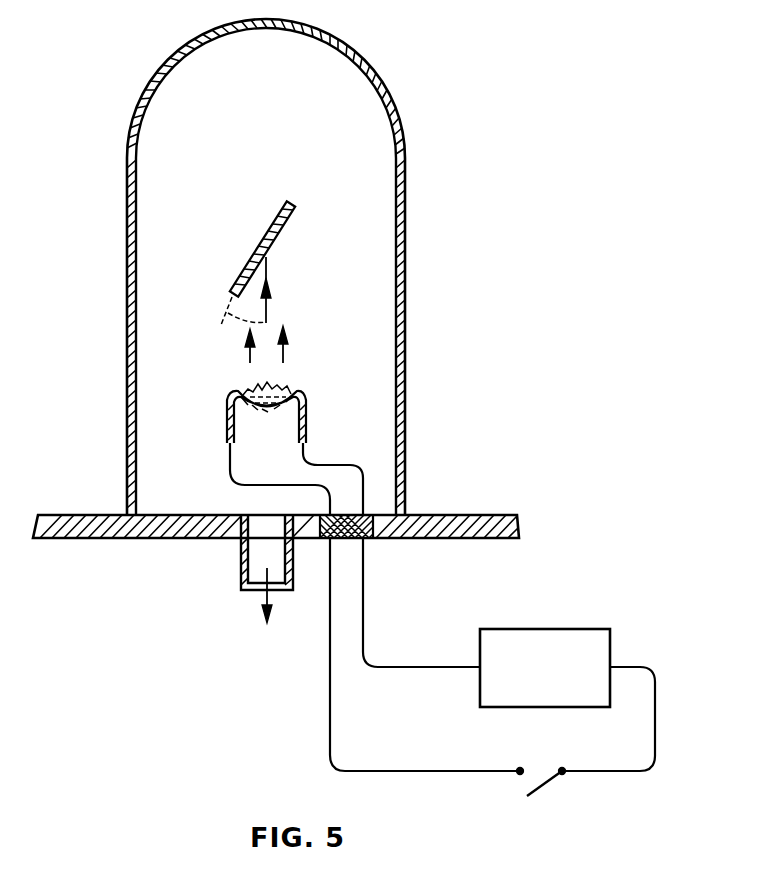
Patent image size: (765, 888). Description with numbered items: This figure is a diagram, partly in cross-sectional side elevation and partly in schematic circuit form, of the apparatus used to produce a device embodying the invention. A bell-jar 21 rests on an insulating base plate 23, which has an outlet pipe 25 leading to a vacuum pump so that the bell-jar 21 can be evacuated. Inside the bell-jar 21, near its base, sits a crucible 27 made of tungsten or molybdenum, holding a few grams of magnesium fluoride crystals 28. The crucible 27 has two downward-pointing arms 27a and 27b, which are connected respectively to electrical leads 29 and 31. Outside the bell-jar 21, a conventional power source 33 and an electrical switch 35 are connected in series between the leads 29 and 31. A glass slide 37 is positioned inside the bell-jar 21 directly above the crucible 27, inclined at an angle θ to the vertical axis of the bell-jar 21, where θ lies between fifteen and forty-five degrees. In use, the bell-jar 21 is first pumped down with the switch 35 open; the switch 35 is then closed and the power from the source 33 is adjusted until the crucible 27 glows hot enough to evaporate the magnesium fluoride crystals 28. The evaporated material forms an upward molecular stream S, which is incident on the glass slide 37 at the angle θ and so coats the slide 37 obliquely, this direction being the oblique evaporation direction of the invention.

The bell-jar 21 is at (406, 407).
The insulating base plate 23 is at (466, 514).
The outlet pipe 25 is at (240, 563).
The crucible 27 is at (227, 401).
The downward-pointing arm 27a is at (227, 420).
The downward-pointing arm 27b is at (308, 420).
The magnesium fluoride crystals 28 is at (272, 391).
The electrical lead 29 is at (403, 771).
The electrical lead 31 is at (363, 613).
The power source 33 is at (596, 629).
The electrical switch 35 is at (545, 784).
The glass slide 37 is at (263, 236).
The molecular stream S is at (250, 350).